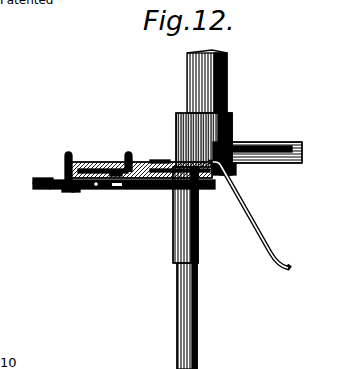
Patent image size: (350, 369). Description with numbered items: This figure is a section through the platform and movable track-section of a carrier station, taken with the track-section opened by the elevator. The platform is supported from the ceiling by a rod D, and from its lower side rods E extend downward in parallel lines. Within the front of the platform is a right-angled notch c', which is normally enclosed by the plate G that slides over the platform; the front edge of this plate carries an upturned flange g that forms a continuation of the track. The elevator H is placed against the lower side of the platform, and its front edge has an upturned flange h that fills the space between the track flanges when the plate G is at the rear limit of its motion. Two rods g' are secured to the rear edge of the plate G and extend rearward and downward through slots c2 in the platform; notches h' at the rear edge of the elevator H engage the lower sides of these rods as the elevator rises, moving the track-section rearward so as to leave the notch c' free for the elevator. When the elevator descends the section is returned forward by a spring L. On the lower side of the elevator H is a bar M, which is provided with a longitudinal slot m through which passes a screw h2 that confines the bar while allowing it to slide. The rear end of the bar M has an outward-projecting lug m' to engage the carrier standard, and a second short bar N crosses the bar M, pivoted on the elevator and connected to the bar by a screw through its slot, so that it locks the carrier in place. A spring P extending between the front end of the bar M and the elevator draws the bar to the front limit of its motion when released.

The rod D is at (202, 108).
The rods E is at (190, 268).
The elevator H is at (140, 163).
The spring L is at (264, 147).
The bar M is at (67, 182).
The short bar N is at (120, 188).
The spring P is at (103, 194).
The plate G is at (160, 161).
The upturned flange g is at (135, 154).
The rods g' is at (249, 215).
The upturned flange h is at (68, 158).
The notches h' is at (239, 176).
The screw h2 is at (75, 192).
The right-angled notch c' is at (127, 148).
The slots c2 is at (214, 175).
The longitudinal slot m is at (58, 207).
The lug m' is at (30, 183).